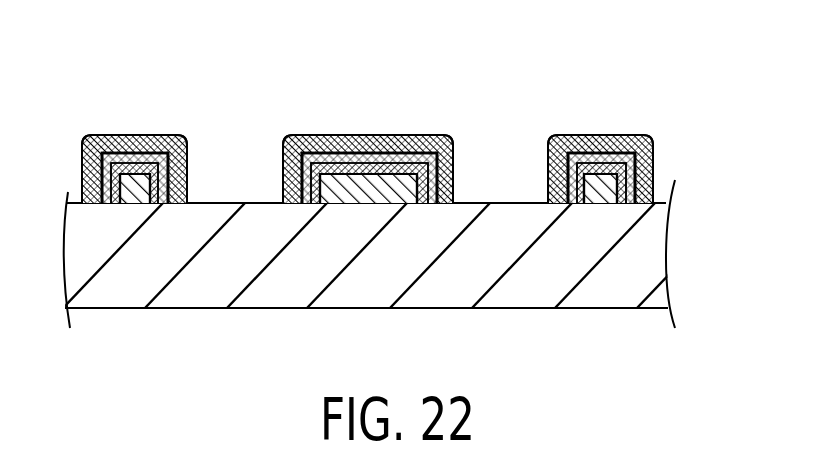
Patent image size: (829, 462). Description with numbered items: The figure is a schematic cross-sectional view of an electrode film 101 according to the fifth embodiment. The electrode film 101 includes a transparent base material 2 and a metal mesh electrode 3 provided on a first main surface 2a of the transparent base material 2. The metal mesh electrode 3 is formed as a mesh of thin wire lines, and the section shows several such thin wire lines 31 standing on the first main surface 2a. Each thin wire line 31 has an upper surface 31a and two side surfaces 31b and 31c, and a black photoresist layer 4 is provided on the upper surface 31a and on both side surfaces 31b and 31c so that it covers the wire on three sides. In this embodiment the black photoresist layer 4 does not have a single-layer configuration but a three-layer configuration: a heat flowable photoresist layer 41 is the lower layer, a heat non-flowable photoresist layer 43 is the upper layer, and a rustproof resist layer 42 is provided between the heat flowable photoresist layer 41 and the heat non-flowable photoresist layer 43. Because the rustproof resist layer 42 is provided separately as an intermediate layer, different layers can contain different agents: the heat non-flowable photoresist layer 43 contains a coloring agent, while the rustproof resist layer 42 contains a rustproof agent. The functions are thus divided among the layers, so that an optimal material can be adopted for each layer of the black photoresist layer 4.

The electrode film 101 is at (115, 51).
The transparent base material 2 is at (650, 253).
The first main surface 2a is at (217, 202).
The metal mesh electrode 3 is at (381, 126).
The thin wire line 31 is at (598, 178).
The upper surface 31a is at (402, 135).
The side surface 31b is at (282, 191).
The side surface 31c is at (456, 191).
The black photoresist layer 4 is at (398, 62).
The heat flowable photoresist layer 41 is at (318, 152).
The rustproof resist layer 42 is at (347, 160).
The heat non-flowable photoresist layer 43 is at (366, 170).